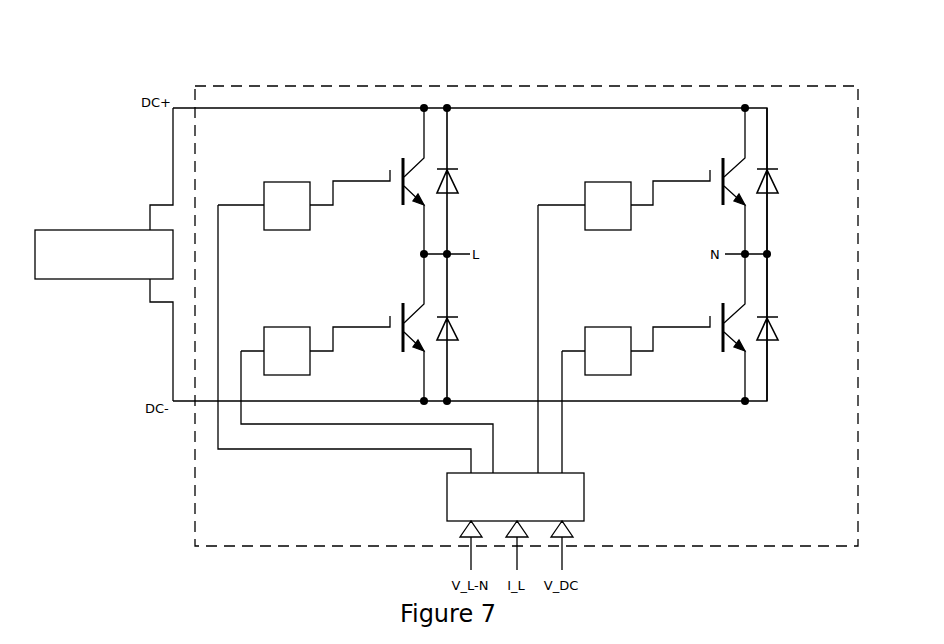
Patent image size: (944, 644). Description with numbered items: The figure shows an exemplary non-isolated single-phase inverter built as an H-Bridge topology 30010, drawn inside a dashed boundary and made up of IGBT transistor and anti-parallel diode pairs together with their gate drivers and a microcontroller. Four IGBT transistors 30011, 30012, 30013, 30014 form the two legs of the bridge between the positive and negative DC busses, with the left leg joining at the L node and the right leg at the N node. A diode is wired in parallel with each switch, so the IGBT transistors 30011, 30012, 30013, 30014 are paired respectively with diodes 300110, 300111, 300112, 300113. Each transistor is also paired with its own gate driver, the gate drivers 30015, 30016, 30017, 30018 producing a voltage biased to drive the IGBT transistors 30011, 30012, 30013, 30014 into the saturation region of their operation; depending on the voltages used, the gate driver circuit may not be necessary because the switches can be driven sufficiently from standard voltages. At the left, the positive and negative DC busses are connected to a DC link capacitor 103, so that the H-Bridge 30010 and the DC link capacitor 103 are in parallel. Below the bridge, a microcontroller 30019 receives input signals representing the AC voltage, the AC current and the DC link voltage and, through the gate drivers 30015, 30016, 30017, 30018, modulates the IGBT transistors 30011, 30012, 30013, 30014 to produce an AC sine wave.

The DC link capacitor 103 is at (105, 230).
The H-Bridge topology 30010 is at (607, 86).
The IGBT transistor 30011 is at (404, 177).
The IGBT transistor 30012 is at (404, 322).
The IGBT transistor 30013 is at (723, 177).
The IGBT transistor 30014 is at (723, 322).
The gate driver 30015 is at (287, 182).
The gate driver 30016 is at (287, 327).
The gate driver 30017 is at (607, 182).
The gate driver 30018 is at (607, 327).
The microcontroller 30019 is at (585, 495).
The diode 300110 is at (452, 191).
The diode 300111 is at (452, 338).
The diode 300112 is at (772, 191).
The diode 300113 is at (772, 338).